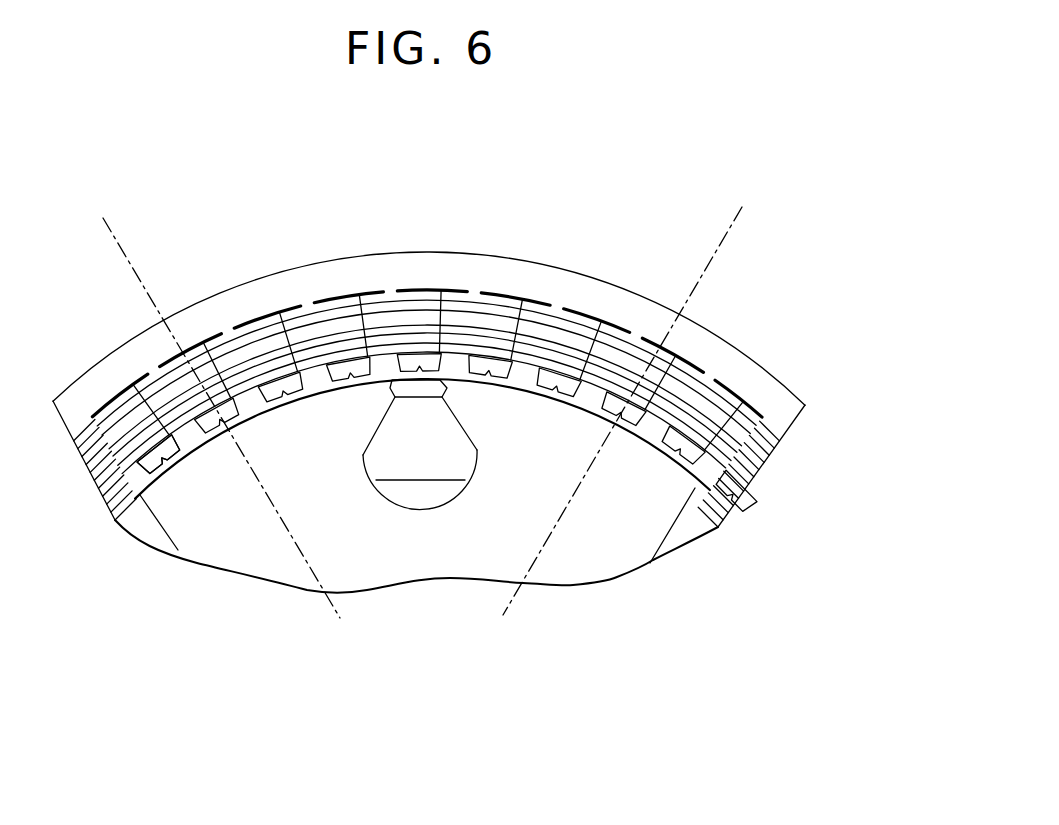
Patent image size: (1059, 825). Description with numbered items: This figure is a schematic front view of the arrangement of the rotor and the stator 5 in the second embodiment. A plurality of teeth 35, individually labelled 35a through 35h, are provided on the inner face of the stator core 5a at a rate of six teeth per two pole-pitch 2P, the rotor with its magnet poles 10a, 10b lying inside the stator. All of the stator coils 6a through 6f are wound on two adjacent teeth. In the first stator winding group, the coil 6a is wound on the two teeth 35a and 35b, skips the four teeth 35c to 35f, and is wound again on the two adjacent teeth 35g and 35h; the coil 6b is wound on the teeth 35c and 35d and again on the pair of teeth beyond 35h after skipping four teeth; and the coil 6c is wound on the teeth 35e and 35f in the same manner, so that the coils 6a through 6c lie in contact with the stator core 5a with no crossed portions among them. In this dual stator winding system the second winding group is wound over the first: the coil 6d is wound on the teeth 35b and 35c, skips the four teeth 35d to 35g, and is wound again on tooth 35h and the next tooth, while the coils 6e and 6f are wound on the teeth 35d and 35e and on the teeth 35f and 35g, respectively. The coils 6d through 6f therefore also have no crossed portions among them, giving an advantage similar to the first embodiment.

The two pole-pitch 2P is at (732, 222).
The stator 5 is at (718, 273).
The stator core 5a is at (733, 353).
The coil 6a is at (128, 412).
The coil 6b is at (262, 333).
The coil 6c is at (442, 327).
The coil 6d is at (227, 370).
The coil 6e is at (360, 310).
The coil 6f is at (523, 347).
The teeth 35 is at (465, 552).
The tooth 35a is at (159, 464).
The tooth 35b is at (217, 426).
The tooth 35c is at (282, 396).
The tooth 35d is at (347, 376).
The tooth 35e is at (423, 364).
The tooth 35f is at (493, 369).
The tooth 35g is at (557, 380).
The tooth 35h is at (620, 425).
The permanent magnet (N pole) 10a is at (413, 472).
The permanent magnet (S pole) 10b is at (640, 553).